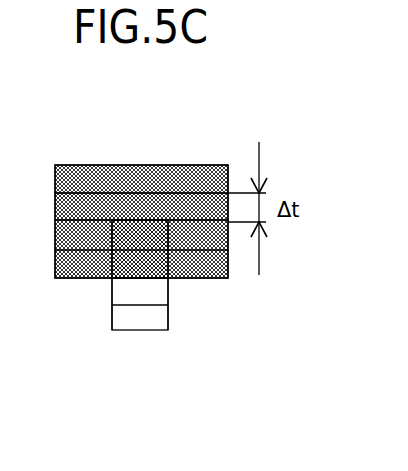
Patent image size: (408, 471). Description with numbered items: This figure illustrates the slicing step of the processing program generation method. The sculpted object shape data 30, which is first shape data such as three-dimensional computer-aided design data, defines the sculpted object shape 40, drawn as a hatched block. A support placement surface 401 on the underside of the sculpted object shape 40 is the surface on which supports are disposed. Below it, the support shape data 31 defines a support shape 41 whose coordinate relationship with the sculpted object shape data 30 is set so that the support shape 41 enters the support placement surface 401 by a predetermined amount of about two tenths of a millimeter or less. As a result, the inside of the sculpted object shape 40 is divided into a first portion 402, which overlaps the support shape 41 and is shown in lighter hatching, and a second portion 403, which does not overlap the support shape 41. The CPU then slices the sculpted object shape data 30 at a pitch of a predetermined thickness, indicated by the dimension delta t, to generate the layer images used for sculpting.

The sculpted object shape data 30 is at (45, 162).
The sculpted object shape 40 is at (112, 175).
The portion 403 is at (150, 222).
The portion 402 is at (138, 240).
The support placement surface 401 is at (78, 278).
The support shape 41 is at (157, 320).
The support shape data 31 is at (187, 365).